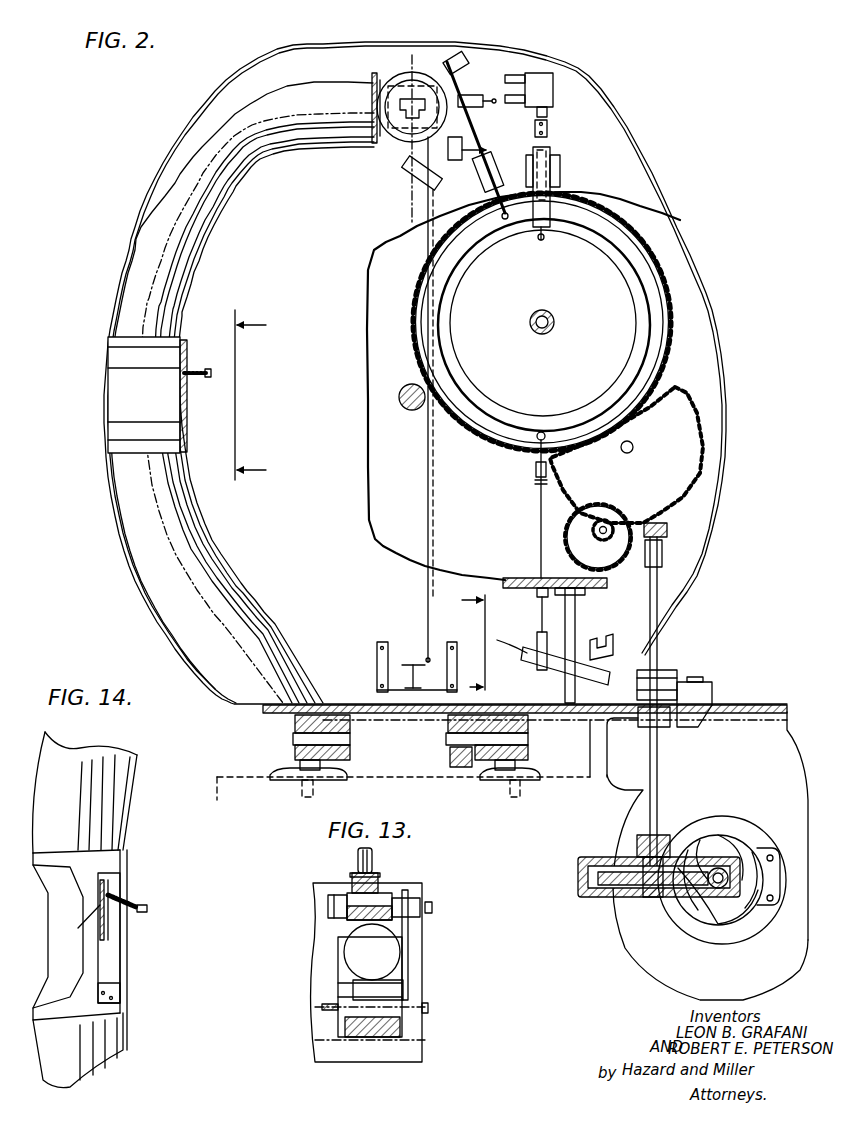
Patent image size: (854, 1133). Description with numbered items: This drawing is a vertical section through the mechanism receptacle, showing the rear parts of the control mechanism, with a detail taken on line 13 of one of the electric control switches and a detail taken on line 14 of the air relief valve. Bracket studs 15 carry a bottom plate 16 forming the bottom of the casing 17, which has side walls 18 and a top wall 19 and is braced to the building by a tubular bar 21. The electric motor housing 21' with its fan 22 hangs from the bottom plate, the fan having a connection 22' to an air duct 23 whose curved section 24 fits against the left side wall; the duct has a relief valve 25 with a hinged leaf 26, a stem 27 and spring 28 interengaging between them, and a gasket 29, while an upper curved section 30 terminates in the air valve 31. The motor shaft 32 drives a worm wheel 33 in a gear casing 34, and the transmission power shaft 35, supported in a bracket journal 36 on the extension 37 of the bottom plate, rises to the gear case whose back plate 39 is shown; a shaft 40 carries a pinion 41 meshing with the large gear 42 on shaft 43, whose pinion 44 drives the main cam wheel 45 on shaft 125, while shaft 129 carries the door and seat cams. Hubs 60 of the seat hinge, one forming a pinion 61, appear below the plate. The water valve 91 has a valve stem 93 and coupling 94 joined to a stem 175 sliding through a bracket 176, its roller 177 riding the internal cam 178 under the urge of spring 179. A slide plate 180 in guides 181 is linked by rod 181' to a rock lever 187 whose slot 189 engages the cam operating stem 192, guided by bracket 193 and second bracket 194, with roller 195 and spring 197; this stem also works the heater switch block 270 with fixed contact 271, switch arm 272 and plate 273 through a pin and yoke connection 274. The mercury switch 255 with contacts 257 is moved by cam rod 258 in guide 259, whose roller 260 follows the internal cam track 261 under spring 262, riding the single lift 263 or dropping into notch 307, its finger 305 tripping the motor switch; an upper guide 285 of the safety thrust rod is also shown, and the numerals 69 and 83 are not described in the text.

In FIG. 2, the section line 13— 13 is at (462, 643).
In FIG. 2, the section line 14— 14 is at (261, 395).
In FIG. 2, the bracket studs 15 is at (527, 760).
In FIG. 2, the bottom plate 16 is at (290, 712).
In FIG. 2, the casing 17 is at (706, 531).
In FIG. 2, the side walls 18 is at (706, 275).
In FIG. 2, the top wall 19 is at (462, 48).
In FIG. 2, the tubular bar 21 is at (382, 137).
In FIG. 2, the electric motor housing 21' is at (802, 826).
In FIG. 2, the fan 22 is at (722, 888).
In FIG. 2, the fan connection 22' is at (512, 859).
In FIG. 2, the air duct 23 is at (210, 545).
In FIG. 2, the curved section 24 is at (230, 653).
In FIG. 14, the curved section 24 is at (105, 1047).
In FIG. 2, the relief valve 25 is at (176, 402).
In FIG. 14, the relief valve 25 is at (130, 927).
In FIG. 14, the hinged leaf 26 is at (108, 957).
In FIG. 14, the stem 27 is at (143, 904).
In FIG. 2, the spring 28 is at (194, 370).
In FIG. 14, the spring 28 is at (125, 898).
In FIG. 14, the gasket 29 is at (83, 910).
In FIG. 2, the curved section 30 is at (255, 148).
In FIG. 14, the curved section 30 is at (105, 808).
In FIG. 2, the air valve 31 is at (422, 64).
In FIG. 2, the motor shaft 32 is at (722, 870).
In FIG. 2, the worm wheel 33 is at (600, 890).
In FIG. 2, the gear casing 34 is at (608, 895).
In FIG. 2, the transmission power shaft 35 is at (668, 528).
In FIG. 2, the bracket journal 36 is at (700, 690).
In FIG. 2, the extension 37 is at (745, 704).
In FIG. 2, the back plate 39 is at (575, 540).
In FIG. 2, the shaft 40 is at (606, 537).
In FIG. 2, the pinion 41 is at (600, 533).
In FIG. 2, the large gear 42 is at (688, 437).
In FIG. 2, the shaft 43 is at (627, 454).
In FIG. 2, the pinion 44 is at (620, 436).
In FIG. 2, the main cam wheel 45 is at (672, 318).
In FIG. 2, the hubs 60 is at (487, 758).
In FIG. 2, the pinion 61 is at (460, 768).
In FIG. 2, the wheel stem 69 is at (510, 752).
In FIG. 2, the shaft bearing 83 is at (665, 670).
In FIG. 2, the water valve 91 is at (556, 90).
In FIG. 2, the valve stem 93 is at (548, 112).
In FIG. 2, the coupling 94 is at (548, 128).
In FIG. 2, the shaft 125 is at (535, 332).
In FIG. 2, the shaft 129 is at (408, 410).
In FIG. 2, the stem 175 is at (555, 162).
In FIG. 2, the bracket 176 is at (560, 172).
In FIG. 2, the roller 177 is at (541, 242).
In FIG. 2, the internal cam 178 is at (503, 235).
In FIG. 2, the spring 179 is at (551, 158).
In FIG. 2, the slide plate 180 is at (401, 662).
In FIG. 2, the guides 181 is at (398, 664).
In FIG. 2, the linking rod 181' is at (405, 399).
In FIG. 2, the rock lever 187 is at (470, 98).
In FIG. 2, the slot 189 is at (470, 104).
In FIG. 2, the cam operating stem 192 is at (480, 143).
In FIG. 2, the guide bracket 193 is at (466, 62).
In FIG. 2, the second bracket 194 is at (490, 195).
In FIG. 2, the roller 195 is at (507, 224).
In FIG. 2, the spring 197 is at (476, 180).
In FIG. 2, the mercury switch 255 is at (588, 682).
In FIG. 13, the mercury switch 255 is at (395, 1022).
In FIG. 2, the contacts 257 is at (603, 636).
In FIG. 2, the cam rod 258 is at (538, 660).
In FIG. 2, the guide 259 is at (518, 578).
In FIG. 2, the roller 260 is at (543, 432).
In FIG. 2, the internal cam track 261 is at (472, 428).
In FIG. 2, the spring 262 is at (540, 482).
In FIG. 2, the single lift 263 is at (537, 440).
In FIG. 2, the switch block 270 is at (407, 192).
In FIG. 2, the fixed contact 271 is at (428, 185).
In FIG. 2, the switch arm 272 is at (405, 160).
In FIG. 2, the plate 273 is at (466, 158).
In FIG. 2, the pin and yoke connection 274 is at (514, 145).
In FIG. 13, the upper guide 285 is at (373, 868).
In FIG. 2, the finger 305 is at (500, 642).
In FIG. 13, the finger 305 is at (378, 960).
In FIG. 2, the notch 307 is at (592, 440).